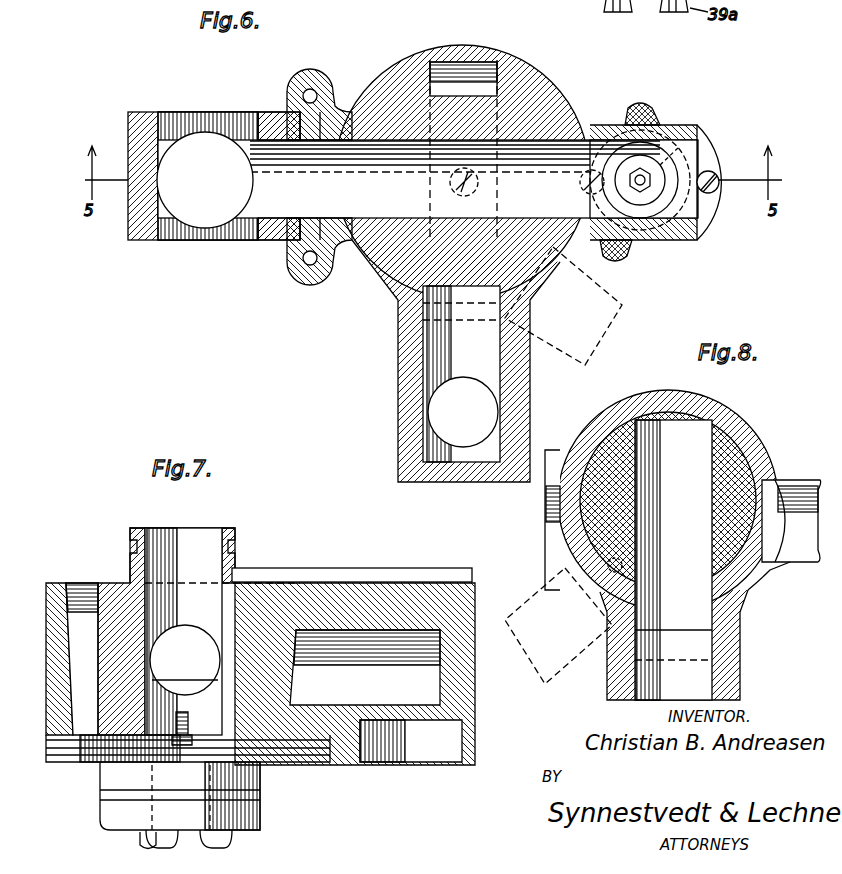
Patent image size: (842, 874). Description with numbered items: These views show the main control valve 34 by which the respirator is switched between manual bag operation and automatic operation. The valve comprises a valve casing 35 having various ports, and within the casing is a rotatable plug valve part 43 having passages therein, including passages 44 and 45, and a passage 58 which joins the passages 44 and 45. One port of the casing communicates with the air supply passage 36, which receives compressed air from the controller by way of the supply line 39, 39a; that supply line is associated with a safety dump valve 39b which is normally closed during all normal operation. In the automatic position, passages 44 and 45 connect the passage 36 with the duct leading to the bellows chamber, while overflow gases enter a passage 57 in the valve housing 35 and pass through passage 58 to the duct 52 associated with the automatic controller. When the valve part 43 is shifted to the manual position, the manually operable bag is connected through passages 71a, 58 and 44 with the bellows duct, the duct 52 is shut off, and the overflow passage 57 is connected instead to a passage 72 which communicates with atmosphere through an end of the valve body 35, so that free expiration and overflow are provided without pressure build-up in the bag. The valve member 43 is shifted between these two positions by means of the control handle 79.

In FIG. 6, the control valve 34 is at (408, 53).
In FIG. 7, the control valve 34 is at (58, 575).
In FIG. 8, the control valve 34 is at (756, 408).
In FIG. 6, the valve casing 35 is at (382, 290).
In FIG. 7, the valve casing 35 is at (48, 665).
In FIG. 8, the valve casing 35 is at (710, 614).
In FIG. 6, the air supply passage 36 is at (338, 244).
In FIG. 6, the supply line 39 is at (618, 228).
In FIG. 7, the supply line 39 is at (240, 836).
In FIG. 6, the supply line 39a is at (662, 150).
In FIG. 7, the supply line 39a is at (140, 840).
In FIG. 6, the safety dump valve 39b is at (672, 182).
In FIG. 7, the safety dump valve 39b is at (262, 790).
In FIG. 6, the rotatable plug valve part 43 is at (520, 100).
In FIG. 7, the rotatable plug valve part 43 is at (116, 598).
In FIG. 8, the rotatable plug valve part 43 is at (770, 492).
In FIG. 6, the passage 44 is at (385, 165).
In FIG. 8, the passage 44 is at (676, 432).
In FIG. 7, the passage 45 is at (200, 548).
In FIG. 6, the duct 52 is at (288, 208).
In FIG. 6, the passage 57 is at (592, 122).
In FIG. 8, the passage 57 is at (782, 585).
In FIG. 6, the passage 58 is at (530, 165).
In FIG. 7, the passage 58 is at (184, 640).
In FIG. 8, the passage 58 is at (700, 614).
In FIG. 6, the passage 71a is at (423, 360).
In FIG. 7, the passage 71a is at (418, 695).
In FIG. 8, the passage 71a is at (696, 684).
In FIG. 6, the passage 72 is at (455, 80).
In FIG. 7, the passage 72 is at (80, 626).
In FIG. 8, the passage 72 is at (780, 498).
In FIG. 6, the control handle 79 is at (622, 304).
In FIG. 7, the control handle 79 is at (372, 572).
In FIG. 8, the control handle 79 is at (546, 680).